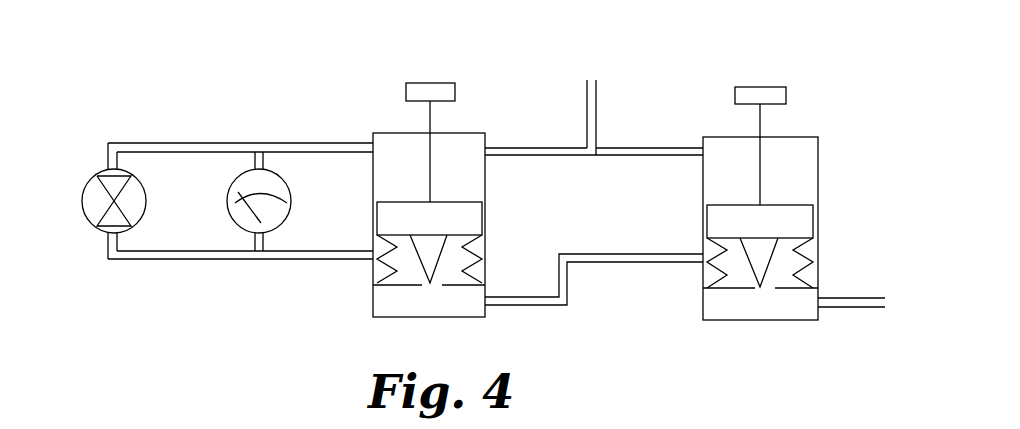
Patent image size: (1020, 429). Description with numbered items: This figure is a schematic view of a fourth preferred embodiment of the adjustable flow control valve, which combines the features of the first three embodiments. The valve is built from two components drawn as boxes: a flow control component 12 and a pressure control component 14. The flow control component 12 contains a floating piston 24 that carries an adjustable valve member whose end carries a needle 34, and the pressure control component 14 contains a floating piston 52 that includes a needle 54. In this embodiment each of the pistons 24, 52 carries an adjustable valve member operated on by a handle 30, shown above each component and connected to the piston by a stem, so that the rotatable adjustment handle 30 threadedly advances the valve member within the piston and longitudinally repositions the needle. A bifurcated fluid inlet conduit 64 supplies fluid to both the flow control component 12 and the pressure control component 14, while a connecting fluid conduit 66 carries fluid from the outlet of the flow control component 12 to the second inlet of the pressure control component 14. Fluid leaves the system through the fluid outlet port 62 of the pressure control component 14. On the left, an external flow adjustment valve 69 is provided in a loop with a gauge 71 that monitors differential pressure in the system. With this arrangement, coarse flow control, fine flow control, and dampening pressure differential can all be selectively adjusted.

The flow control component 12 is at (436, 213).
The pressure control component 14 is at (806, 200).
The floating piston 24 is at (475, 223).
The rotatable adjustment handle 30 is at (445, 88).
The needle 34 is at (762, 258).
The floating piston 52 is at (807, 227).
The needle 54 is at (430, 264).
The fluid outlet port 62 is at (860, 307).
The bifurcated fluid inlet conduit 64 is at (597, 118).
The connecting fluid conduit 66 is at (620, 260).
The external flow adjustment valve 69 is at (97, 176).
The gauge 71 is at (281, 223).